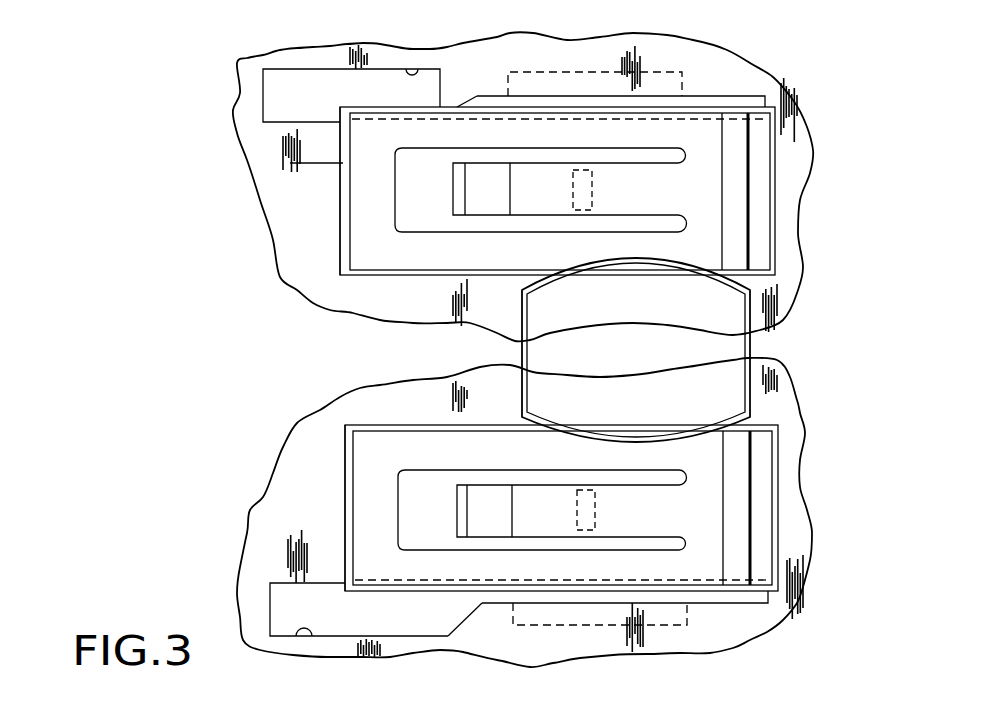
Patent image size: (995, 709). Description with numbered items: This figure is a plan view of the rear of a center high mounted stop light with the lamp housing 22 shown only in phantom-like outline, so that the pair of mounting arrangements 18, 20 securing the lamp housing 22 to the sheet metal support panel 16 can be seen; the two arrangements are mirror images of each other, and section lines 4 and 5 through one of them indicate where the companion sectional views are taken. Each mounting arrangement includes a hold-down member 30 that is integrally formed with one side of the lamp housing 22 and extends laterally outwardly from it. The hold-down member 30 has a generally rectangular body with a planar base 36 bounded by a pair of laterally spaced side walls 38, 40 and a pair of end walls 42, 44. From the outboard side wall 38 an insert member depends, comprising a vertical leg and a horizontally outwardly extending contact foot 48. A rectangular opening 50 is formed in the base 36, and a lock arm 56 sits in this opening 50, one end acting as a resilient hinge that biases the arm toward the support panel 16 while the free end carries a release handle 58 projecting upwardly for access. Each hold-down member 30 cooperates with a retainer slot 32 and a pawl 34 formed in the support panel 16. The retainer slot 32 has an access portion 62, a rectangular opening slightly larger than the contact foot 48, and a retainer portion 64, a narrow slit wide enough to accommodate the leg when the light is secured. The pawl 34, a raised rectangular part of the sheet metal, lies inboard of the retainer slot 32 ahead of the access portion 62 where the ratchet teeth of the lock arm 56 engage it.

The sheet metal support panel 16 is at (515, 337).
The mounting arrangement 18 is at (301, 463).
The mounting arrangement 20 is at (284, 190).
The lamp housing 22 is at (657, 407).
The hold-down member 30 is at (335, 210).
The retainer slot 32 is at (404, 66).
The pawl 34 is at (592, 183).
The planar base 36 is at (455, 258).
The outboard side wall 38 is at (441, 100).
The side wall 40 is at (372, 428).
The end wall 42 is at (290, 163).
The end wall 44 is at (762, 208).
The contact foot 48 is at (658, 80).
The rectangular opening 50 is at (407, 215).
The lock arm 56 is at (549, 227).
The release handle 58 is at (473, 210).
The access portion 62 is at (303, 90).
The retainer portion 64 is at (723, 97).
The section line 4- 4 is at (240, 512).
The section line 5- 5 is at (598, 360).